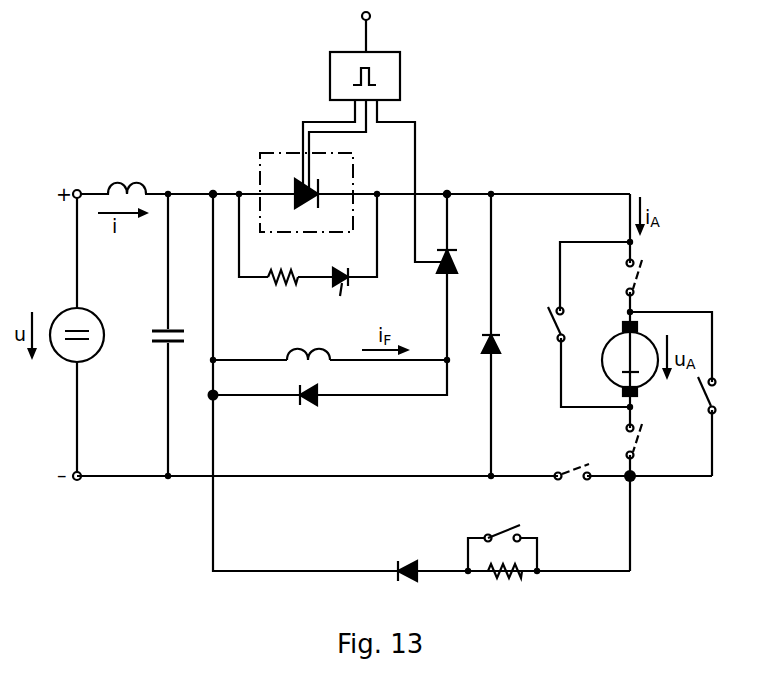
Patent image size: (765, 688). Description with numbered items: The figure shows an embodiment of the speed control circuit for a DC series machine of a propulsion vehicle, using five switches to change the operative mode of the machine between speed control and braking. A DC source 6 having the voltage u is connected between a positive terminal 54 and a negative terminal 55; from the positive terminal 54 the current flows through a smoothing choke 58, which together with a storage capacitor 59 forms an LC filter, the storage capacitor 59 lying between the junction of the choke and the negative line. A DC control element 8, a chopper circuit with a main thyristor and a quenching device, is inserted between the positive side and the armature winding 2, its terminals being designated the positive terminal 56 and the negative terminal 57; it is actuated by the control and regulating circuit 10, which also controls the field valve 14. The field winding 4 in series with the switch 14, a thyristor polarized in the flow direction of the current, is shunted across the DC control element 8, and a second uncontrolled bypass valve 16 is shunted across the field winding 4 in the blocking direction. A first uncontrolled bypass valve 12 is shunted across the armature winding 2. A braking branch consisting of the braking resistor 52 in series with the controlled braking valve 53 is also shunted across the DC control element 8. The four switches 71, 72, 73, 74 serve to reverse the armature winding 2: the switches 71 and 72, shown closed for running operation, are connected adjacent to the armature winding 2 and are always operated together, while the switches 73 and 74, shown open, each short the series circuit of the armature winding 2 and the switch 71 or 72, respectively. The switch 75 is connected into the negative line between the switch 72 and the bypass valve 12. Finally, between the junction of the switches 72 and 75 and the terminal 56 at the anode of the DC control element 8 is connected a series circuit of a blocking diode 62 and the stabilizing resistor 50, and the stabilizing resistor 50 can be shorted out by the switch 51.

The armature winding 2 is at (602, 378).
The field winding 4 is at (300, 350).
The DC source 6 is at (100, 323).
The DC control element 8 is at (276, 130).
The control and regulating circuit 10 is at (400, 77).
The first uncontrolled bypass valve 12 is at (500, 347).
The switch 14 is at (452, 270).
The second uncontrolled bypass valve 16 is at (306, 400).
The stabilizing resistor 50 is at (518, 573).
The switch 51 is at (511, 525).
The braking resistor 52 is at (286, 287).
The controlled braking valve 53 is at (353, 281).
The positive terminal 54 is at (79, 182).
The negative terminal 55 is at (79, 490).
The positive terminal of the DC control element 56 is at (213, 191).
The negative terminal of the DC control element 57 is at (447, 191).
The smoothing choke 58 is at (137, 187).
The storage capacitor 59 is at (163, 344).
The blocking diode 62 is at (408, 567).
The switch 71 is at (627, 280).
The switch 72 is at (627, 443).
The switch 73 is at (553, 326).
The switch 74 is at (704, 403).
The switch 75 is at (573, 480).